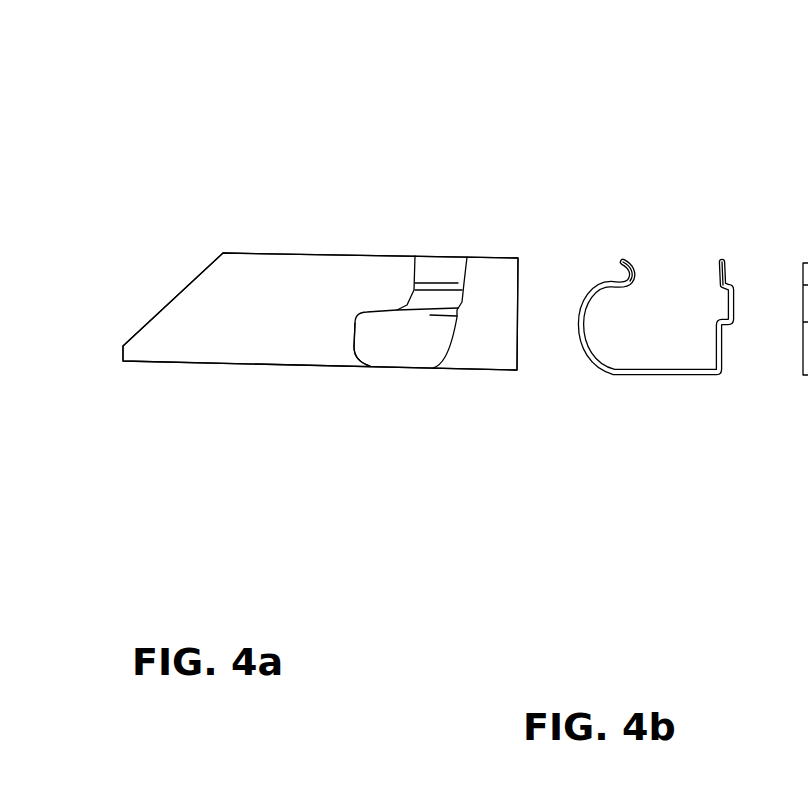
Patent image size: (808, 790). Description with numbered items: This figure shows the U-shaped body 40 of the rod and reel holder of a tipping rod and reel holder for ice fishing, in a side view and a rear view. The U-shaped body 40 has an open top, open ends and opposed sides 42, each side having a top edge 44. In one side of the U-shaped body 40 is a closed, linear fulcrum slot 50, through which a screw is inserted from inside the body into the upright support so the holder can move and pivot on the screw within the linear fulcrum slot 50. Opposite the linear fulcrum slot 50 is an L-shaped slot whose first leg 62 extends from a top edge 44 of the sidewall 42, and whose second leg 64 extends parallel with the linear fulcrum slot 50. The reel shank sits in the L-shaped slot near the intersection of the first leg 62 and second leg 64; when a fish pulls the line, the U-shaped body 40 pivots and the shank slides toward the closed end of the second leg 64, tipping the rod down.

In FIG. 4A, the U-shaped body 40 is at (128, 467).
In FIG. 4A, the opposed sides 42 is at (252, 300).
In FIG. 4B, the opposed sides 42 is at (470, 548).
In FIG. 4B, the top edges 44 is at (735, 163).
In FIG. 4A, the linear fulcrum slot 50 is at (431, 283).
In FIG. 4A, the first leg 62 is at (448, 268).
In FIG. 4A, the second leg 64 is at (368, 398).